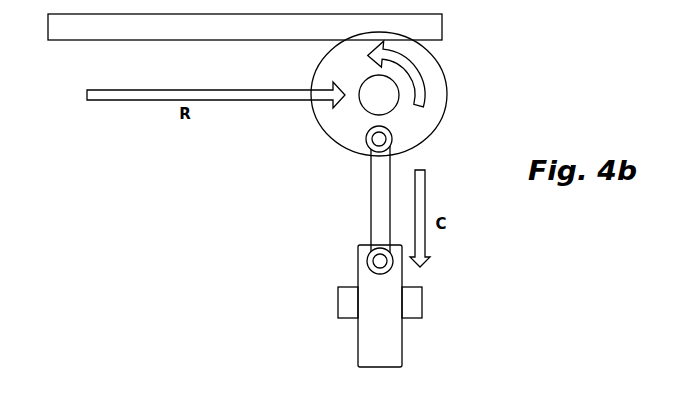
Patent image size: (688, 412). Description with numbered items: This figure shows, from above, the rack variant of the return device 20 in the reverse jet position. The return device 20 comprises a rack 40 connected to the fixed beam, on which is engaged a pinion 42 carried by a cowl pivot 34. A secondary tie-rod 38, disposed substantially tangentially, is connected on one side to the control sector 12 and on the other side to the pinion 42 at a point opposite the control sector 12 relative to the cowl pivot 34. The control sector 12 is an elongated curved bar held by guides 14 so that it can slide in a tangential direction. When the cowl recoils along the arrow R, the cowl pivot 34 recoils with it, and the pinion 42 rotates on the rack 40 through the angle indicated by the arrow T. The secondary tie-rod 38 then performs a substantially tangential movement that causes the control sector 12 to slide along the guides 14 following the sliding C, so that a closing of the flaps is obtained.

The control sector 12 is at (402, 347).
The guides 14 is at (422, 297).
The return device 20 is at (432, 99).
The cowl pivot 34 is at (392, 108).
The secondary tie-rod 38 is at (371, 215).
The rack 40 is at (253, 40).
The pinion 42 is at (352, 152).